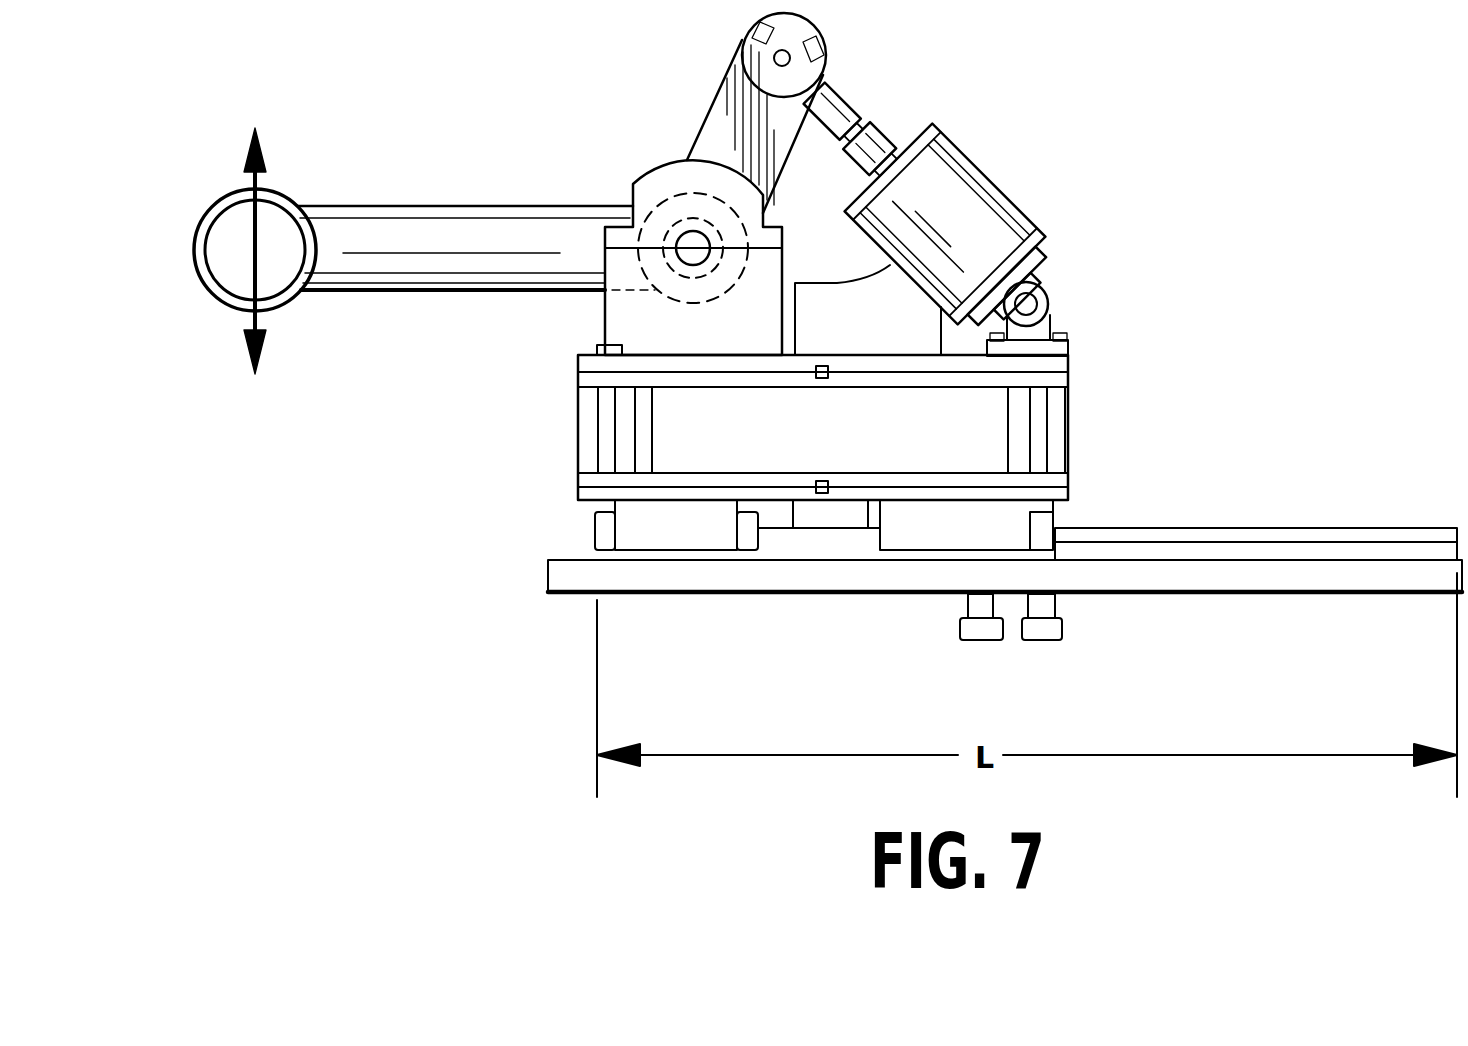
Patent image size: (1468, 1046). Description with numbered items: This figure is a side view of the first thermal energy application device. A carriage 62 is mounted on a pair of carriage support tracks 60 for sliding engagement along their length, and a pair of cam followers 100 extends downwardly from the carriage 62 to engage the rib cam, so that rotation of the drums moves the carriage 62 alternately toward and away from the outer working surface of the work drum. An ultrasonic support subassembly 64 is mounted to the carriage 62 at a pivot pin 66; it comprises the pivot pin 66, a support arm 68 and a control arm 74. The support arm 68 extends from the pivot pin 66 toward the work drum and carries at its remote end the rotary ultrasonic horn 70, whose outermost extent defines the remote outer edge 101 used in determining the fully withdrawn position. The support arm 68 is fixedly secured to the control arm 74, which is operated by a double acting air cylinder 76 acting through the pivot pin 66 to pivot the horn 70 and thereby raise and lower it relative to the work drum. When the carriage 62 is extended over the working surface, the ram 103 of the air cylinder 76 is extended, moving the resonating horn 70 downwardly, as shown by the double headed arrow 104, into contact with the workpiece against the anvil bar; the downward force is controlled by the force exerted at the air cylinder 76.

The carriage support tracks 60 is at (1227, 527).
The carriage 62 is at (1072, 432).
The ultrasonic support subassembly 64 is at (545, 195).
The pivot pin 66 is at (691, 246).
The support arm 68 is at (396, 226).
The rotary ultrasonic horn 70 is at (207, 215).
The control arm 74 is at (725, 82).
The double acting air cylinder 76 is at (992, 178).
The cam followers 100 is at (1032, 642).
The remote outer edge 101 is at (197, 253).
The ram 103 is at (888, 130).
The double headed arrow 104 is at (247, 182).